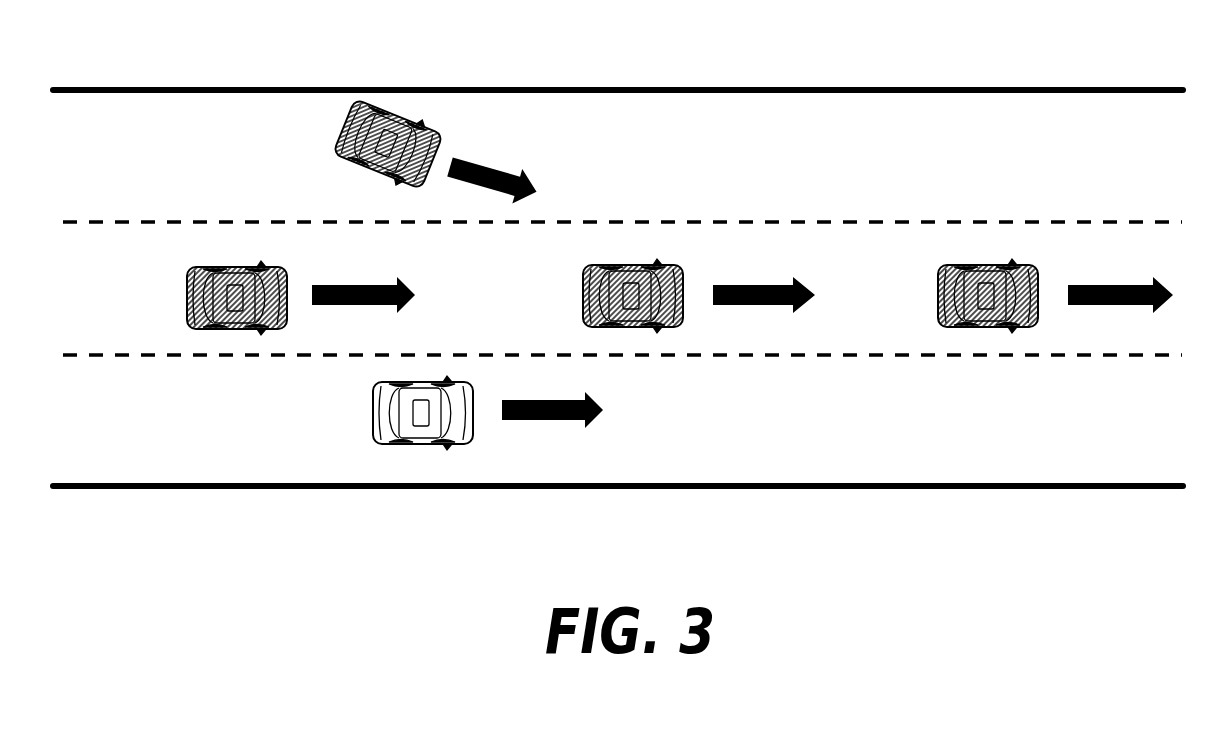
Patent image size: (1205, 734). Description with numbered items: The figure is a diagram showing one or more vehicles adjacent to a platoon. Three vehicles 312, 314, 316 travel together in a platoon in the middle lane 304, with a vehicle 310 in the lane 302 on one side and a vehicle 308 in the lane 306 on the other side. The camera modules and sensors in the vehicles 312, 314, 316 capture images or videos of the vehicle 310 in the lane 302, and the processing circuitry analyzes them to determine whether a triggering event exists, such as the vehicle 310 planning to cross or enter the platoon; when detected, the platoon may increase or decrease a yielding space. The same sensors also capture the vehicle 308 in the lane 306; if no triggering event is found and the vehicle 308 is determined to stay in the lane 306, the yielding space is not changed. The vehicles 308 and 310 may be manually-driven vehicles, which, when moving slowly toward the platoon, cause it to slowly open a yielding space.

The lane 302 is at (143, 170).
The second lane 304 is at (143, 307).
The lane 306 is at (143, 434).
The vehicle 308 is at (402, 444).
The vehicle 310 is at (410, 118).
The vehicle 312 is at (250, 266).
The vehicle 314 is at (683, 267).
The vehicle 316 is at (1020, 267).